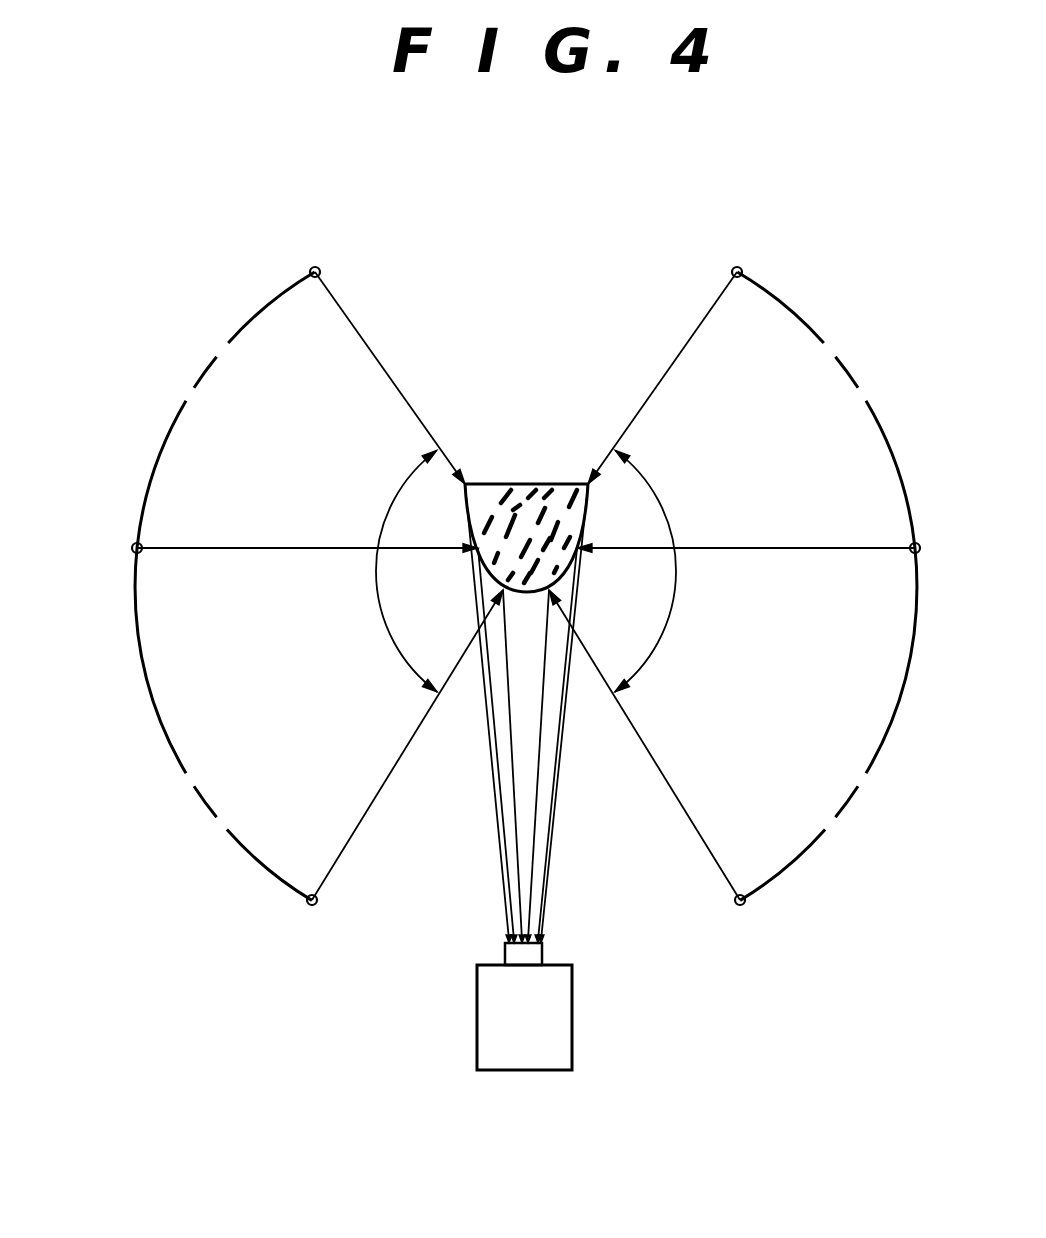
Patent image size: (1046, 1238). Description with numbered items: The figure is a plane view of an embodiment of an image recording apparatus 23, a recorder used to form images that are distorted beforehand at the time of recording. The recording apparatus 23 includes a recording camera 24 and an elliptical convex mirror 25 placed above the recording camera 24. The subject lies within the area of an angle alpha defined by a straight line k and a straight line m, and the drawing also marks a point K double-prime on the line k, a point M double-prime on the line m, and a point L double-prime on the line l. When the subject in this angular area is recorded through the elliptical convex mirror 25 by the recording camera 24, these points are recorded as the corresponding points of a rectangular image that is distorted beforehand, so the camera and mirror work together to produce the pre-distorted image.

The image recording apparatus 23 is at (545, 258).
The recording camera 24 is at (540, 1037).
The elliptical convex mirror 25 is at (532, 503).